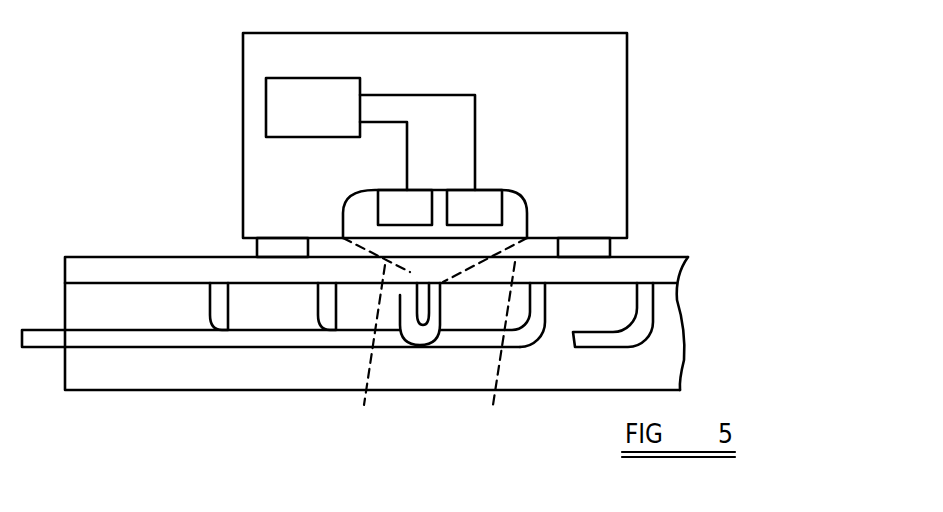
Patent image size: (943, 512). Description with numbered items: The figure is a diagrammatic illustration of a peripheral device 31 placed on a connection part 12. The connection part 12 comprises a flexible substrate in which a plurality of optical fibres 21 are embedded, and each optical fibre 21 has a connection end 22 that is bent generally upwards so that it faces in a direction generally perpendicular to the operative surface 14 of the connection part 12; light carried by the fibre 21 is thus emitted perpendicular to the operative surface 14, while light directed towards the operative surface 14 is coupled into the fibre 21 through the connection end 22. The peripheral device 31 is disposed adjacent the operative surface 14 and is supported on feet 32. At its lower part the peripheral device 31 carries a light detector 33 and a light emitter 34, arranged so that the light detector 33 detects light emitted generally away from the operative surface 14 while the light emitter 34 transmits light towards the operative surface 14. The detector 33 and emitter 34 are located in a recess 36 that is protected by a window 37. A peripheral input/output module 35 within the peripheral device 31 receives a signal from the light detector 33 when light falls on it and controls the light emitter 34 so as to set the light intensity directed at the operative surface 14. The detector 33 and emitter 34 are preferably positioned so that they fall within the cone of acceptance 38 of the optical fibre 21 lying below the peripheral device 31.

The connection part 12 is at (143, 390).
The operative surface 14 is at (120, 257).
The optical fibre 21 is at (243, 340).
The connection end 22 is at (442, 300).
The peripheral device 31 is at (243, 160).
The feet 32 is at (257, 249).
The light detector 33 is at (417, 190).
The light emitter 34 is at (492, 190).
The peripheral input/output module 35 is at (266, 117).
The recess 36 is at (527, 214).
The window 37 is at (497, 352).
The cone of acceptance 38 is at (371, 354).